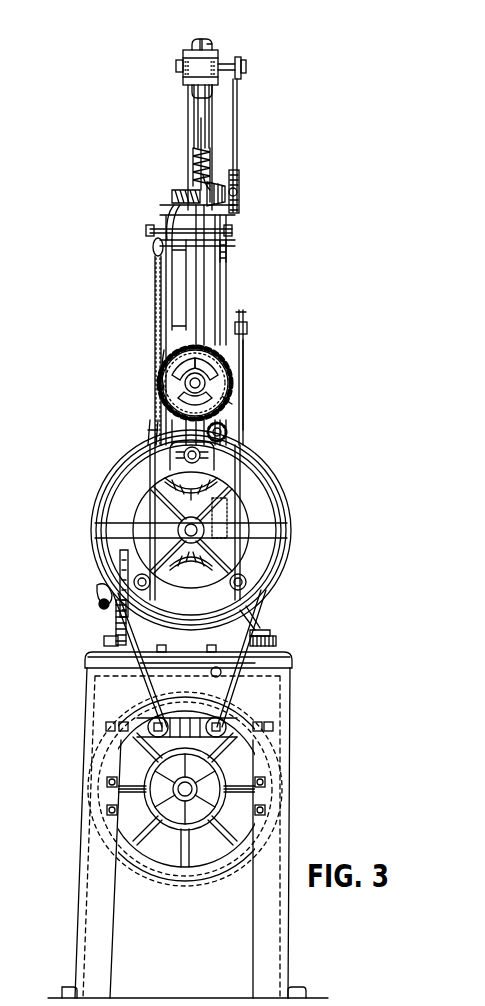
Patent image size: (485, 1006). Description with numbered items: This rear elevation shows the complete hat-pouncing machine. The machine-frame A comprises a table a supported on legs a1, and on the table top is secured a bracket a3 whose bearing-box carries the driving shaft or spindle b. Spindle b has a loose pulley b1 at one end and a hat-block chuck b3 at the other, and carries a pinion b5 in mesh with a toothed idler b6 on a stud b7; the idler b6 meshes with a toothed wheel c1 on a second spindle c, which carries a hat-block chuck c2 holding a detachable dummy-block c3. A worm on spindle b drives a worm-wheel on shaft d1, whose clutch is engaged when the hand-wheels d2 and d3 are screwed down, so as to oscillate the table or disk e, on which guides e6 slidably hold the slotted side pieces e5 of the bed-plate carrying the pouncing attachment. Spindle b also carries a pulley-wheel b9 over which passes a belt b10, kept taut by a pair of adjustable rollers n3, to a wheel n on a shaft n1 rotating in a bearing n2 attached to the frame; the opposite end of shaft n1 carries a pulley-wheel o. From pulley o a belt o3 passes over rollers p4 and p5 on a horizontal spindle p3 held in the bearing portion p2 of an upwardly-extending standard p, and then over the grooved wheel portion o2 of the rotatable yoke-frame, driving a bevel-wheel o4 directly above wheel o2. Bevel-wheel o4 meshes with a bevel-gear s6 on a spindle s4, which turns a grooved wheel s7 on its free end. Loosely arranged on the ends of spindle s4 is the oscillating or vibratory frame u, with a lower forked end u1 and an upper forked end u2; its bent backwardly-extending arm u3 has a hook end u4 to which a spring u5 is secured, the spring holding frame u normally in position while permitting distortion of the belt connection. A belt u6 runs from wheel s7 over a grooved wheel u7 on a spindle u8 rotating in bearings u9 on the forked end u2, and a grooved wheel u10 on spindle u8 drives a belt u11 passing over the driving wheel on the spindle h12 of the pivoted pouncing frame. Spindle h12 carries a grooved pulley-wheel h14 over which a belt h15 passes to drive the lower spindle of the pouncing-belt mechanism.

The upper forked end u2 is at (200, 40).
The belt u11 is at (203, 40).
The grooved wheel u10 is at (210, 44).
The bearings u9 is at (183, 54).
The spindle u8 is at (176, 66).
The grooved wheel u7 is at (240, 58).
The belt u6 is at (237, 128).
The oscillating or vibratory frame u is at (191, 110).
The bent backwardly-extending arm u3 is at (194, 128).
The hook end or loop u4 is at (201, 132).
The spring u5 is at (193, 160).
The lower forked end u1 is at (208, 178).
The bevel-gear s6 is at (239, 175).
The grooved wheel s7 is at (239, 183).
The spindle or shaft s4 is at (237, 192).
The grooved wheel portion o2 is at (225, 204).
The bevel-wheel o4 is at (172, 196).
The roller or wheel p4 is at (168, 212).
The horizontal spindle p3 is at (146, 231).
The roller or wheel p5 is at (226, 252).
The bearing portion p2 is at (178, 252).
The belt o3 is at (220, 286).
The upwardly-extending rod or standard p is at (200, 300).
The grooved pulley-wheel h14 is at (243, 318).
The shaft or spindle h12 is at (247, 328).
The belt h15 is at (243, 362).
The hat-block chuck c2 is at (155, 350).
The dummy-block c3 is at (172, 350).
The shaft or spindle c is at (185, 378).
The toothed wheel c1 is at (212, 388).
The hat-block chuck b3 is at (150, 435).
The toothed idler b6 is at (226, 432).
The stud or pin b7 is at (172, 450).
The driving shaft or spindle b is at (104, 548).
The loose pulley b1 is at (140, 507).
The pinion b5 is at (210, 520).
The pulley-wheel b9 is at (287, 528).
The shaft d1 is at (97, 592).
The hand-wheel d2 is at (99, 604).
The hand-wheel d3 is at (116, 625).
The oscillating table or disk e is at (104, 641).
The grooved or slotted longitudinal side pieces e5 is at (258, 628).
The guides e6 is at (276, 632).
The bracket a3 is at (186, 643).
The table a is at (292, 660).
The machine-frame A is at (266, 681).
The legs a1 is at (283, 820).
The belt b10 is at (200, 688).
The adjustable rollers n3 is at (189, 727).
The wheel n is at (222, 782).
The shaft n1 is at (188, 796).
The bearing n2 is at (165, 806).
The pulley-wheel o is at (200, 882).